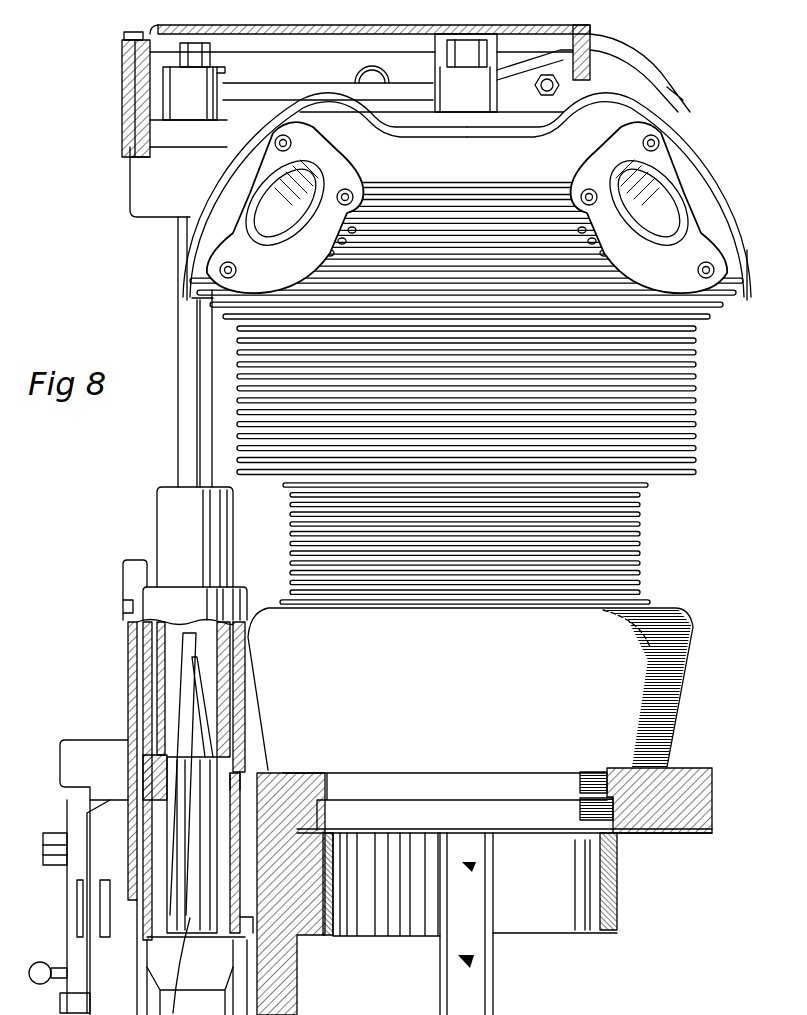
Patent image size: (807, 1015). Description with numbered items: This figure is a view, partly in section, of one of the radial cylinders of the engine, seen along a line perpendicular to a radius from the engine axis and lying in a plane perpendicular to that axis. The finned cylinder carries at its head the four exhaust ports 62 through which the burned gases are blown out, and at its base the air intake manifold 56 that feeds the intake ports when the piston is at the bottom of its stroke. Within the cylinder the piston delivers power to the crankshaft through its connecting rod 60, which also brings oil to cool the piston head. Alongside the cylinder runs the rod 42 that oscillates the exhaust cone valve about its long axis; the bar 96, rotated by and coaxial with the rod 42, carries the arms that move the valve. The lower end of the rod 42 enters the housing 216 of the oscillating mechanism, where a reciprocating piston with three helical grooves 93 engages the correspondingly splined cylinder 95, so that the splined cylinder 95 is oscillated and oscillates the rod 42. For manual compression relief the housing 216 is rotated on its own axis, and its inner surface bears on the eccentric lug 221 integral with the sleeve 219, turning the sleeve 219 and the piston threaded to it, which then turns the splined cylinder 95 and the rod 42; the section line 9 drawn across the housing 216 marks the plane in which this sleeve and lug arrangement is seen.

The bar 96 is at (163, 135).
The exhaust ports 62 is at (228, 236).
The rod 42 is at (182, 463).
The air intake manifold 56 is at (693, 627).
The housing 216 is at (128, 642).
The helical grooves 93 is at (193, 667).
The splined cylinder 95 is at (185, 703).
The section line 9- 9 is at (117, 800).
The sleeve 219 is at (240, 885).
The eccentric lug 221 is at (252, 920).
The connecting rod 60 is at (480, 967).